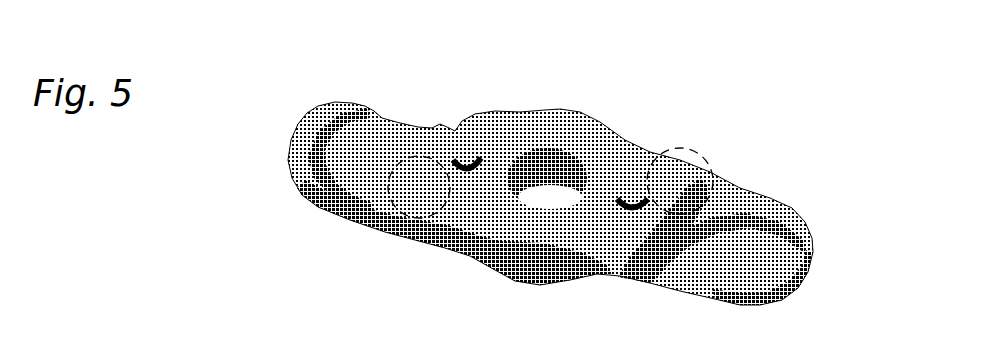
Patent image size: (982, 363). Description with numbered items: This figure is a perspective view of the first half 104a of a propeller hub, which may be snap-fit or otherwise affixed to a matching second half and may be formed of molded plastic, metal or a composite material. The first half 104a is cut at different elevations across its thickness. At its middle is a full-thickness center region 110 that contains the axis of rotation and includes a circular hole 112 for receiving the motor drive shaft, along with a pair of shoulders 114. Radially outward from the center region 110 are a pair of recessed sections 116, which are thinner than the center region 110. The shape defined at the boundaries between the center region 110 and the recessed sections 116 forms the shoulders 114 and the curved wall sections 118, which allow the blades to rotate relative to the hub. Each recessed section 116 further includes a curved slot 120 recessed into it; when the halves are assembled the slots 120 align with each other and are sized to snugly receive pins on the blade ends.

The first half of hub 104a is at (735, 83).
The center region 110 is at (528, 204).
The circular hole 112 is at (565, 209).
The shoulders 114 is at (397, 186).
The recessed sections 116 is at (340, 186).
The curved wall sections 118 is at (457, 130).
The curved slots 120 is at (378, 140).